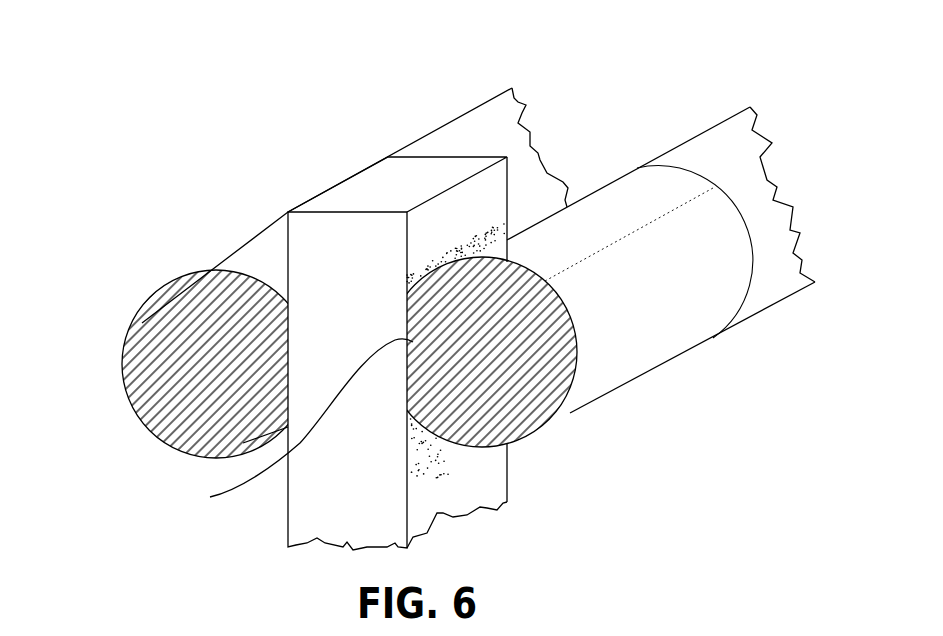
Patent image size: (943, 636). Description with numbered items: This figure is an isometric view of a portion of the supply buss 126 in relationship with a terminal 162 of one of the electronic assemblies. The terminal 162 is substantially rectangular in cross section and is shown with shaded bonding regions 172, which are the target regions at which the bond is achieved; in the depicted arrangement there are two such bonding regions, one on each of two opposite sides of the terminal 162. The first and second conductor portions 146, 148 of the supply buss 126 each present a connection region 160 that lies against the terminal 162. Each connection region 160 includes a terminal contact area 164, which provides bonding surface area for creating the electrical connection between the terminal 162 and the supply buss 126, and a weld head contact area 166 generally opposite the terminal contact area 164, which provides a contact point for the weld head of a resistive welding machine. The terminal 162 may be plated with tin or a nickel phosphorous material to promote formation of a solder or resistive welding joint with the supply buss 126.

The supply buss 126 is at (405, 121).
The first conductor portion 146 is at (548, 77).
The second conductor portion 148 is at (750, 187).
The connection region 160 is at (570, 413).
The terminal 162 is at (363, 262).
The terminal contact area 164 is at (278, 302).
The weld head contact area 166 is at (142, 322).
The bonding region 172 is at (418, 447).